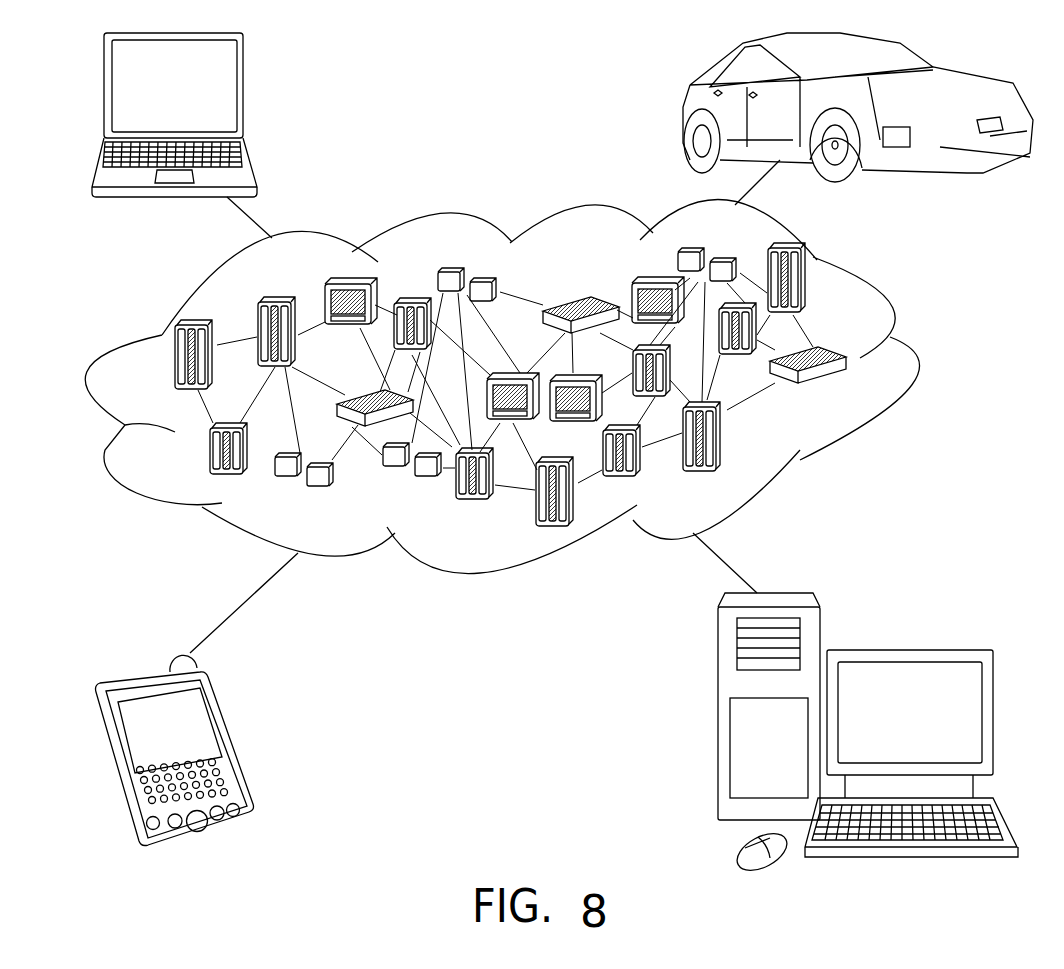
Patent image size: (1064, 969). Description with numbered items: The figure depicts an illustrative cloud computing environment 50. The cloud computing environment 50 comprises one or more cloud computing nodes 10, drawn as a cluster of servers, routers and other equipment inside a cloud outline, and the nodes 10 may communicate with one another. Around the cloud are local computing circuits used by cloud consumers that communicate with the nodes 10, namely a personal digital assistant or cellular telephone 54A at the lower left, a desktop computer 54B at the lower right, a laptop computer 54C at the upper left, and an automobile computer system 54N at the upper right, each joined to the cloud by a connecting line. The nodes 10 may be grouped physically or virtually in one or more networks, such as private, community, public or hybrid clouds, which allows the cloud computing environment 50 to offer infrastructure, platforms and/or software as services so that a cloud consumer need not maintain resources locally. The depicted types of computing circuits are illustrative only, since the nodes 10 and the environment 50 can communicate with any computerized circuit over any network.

The cloud computing node 10 is at (847, 393).
The cloud computing environment 50 is at (912, 367).
The personal digital assistant or cellular telephone 54A is at (237, 742).
The desktop computer 54B is at (907, 648).
The laptop computer 54C is at (243, 95).
The automobile computer system 54N is at (688, 108).